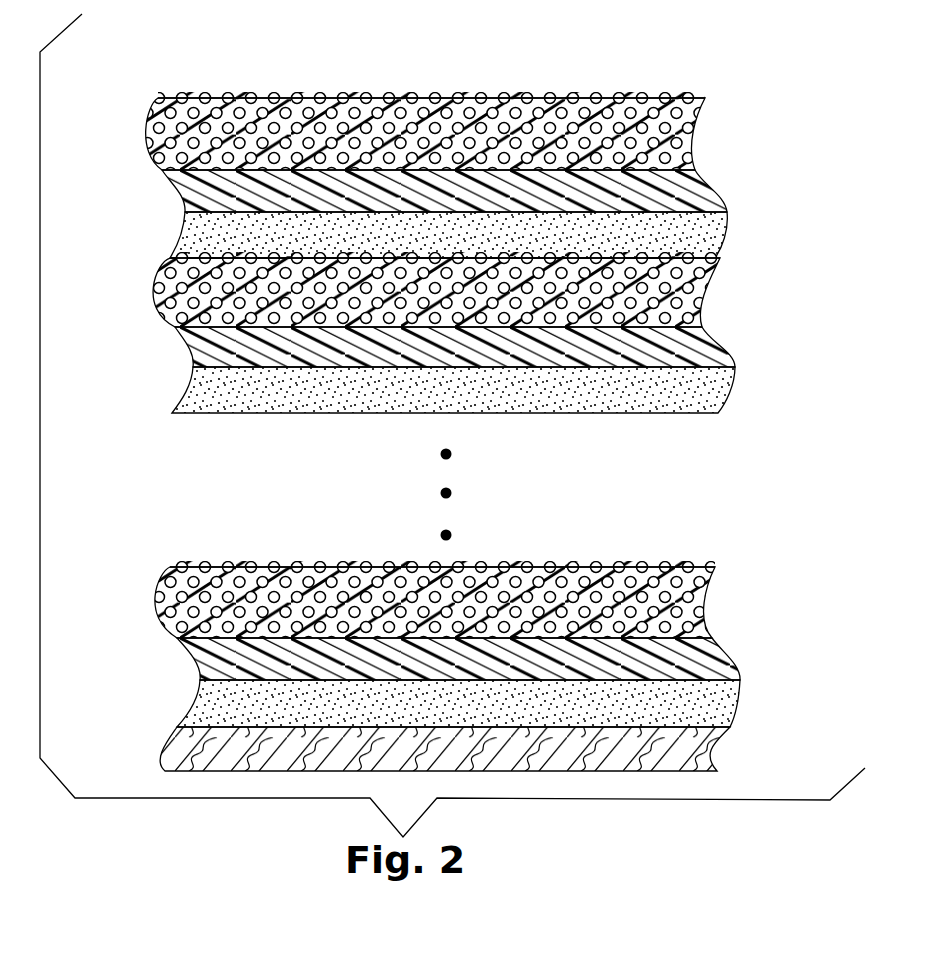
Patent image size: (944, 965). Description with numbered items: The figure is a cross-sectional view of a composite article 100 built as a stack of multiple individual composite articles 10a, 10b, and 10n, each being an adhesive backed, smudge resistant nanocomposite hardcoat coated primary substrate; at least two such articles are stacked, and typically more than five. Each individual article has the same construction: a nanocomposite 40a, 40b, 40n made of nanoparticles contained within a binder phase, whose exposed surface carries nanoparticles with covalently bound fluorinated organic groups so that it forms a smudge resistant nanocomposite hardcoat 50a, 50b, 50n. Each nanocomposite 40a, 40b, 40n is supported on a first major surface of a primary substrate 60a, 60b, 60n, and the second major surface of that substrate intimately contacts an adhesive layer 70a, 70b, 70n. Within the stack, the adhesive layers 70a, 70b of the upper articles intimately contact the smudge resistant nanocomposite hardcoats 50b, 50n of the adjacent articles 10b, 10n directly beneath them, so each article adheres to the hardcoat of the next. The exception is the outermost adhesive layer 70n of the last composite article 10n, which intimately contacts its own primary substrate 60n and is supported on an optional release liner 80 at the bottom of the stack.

The composite article 100 is at (525, 76).
The composite article 10a is at (803, 107).
The composite article 10b is at (803, 264).
The composite article 10n is at (803, 577).
The nanocomposite 40a is at (693, 137).
The nanocomposite 40b is at (698, 295).
The nanocomposite 40n is at (705, 608).
The smudge resistant nanocomposite hardcoat 50a is at (178, 97).
The smudge resistant nanocomposite hardcoat 50b is at (176, 245).
The smudge resistant nanocomposite hardcoat 50n is at (188, 563).
The primary substrate 60a is at (713, 195).
The primary substrate 60b is at (720, 352).
The primary substrate 60n is at (727, 664).
The adhesive layer 70a is at (716, 240).
The adhesive layer 70b is at (725, 396).
The outermost adhesive layer 70n is at (735, 710).
The release liner 80 is at (700, 758).